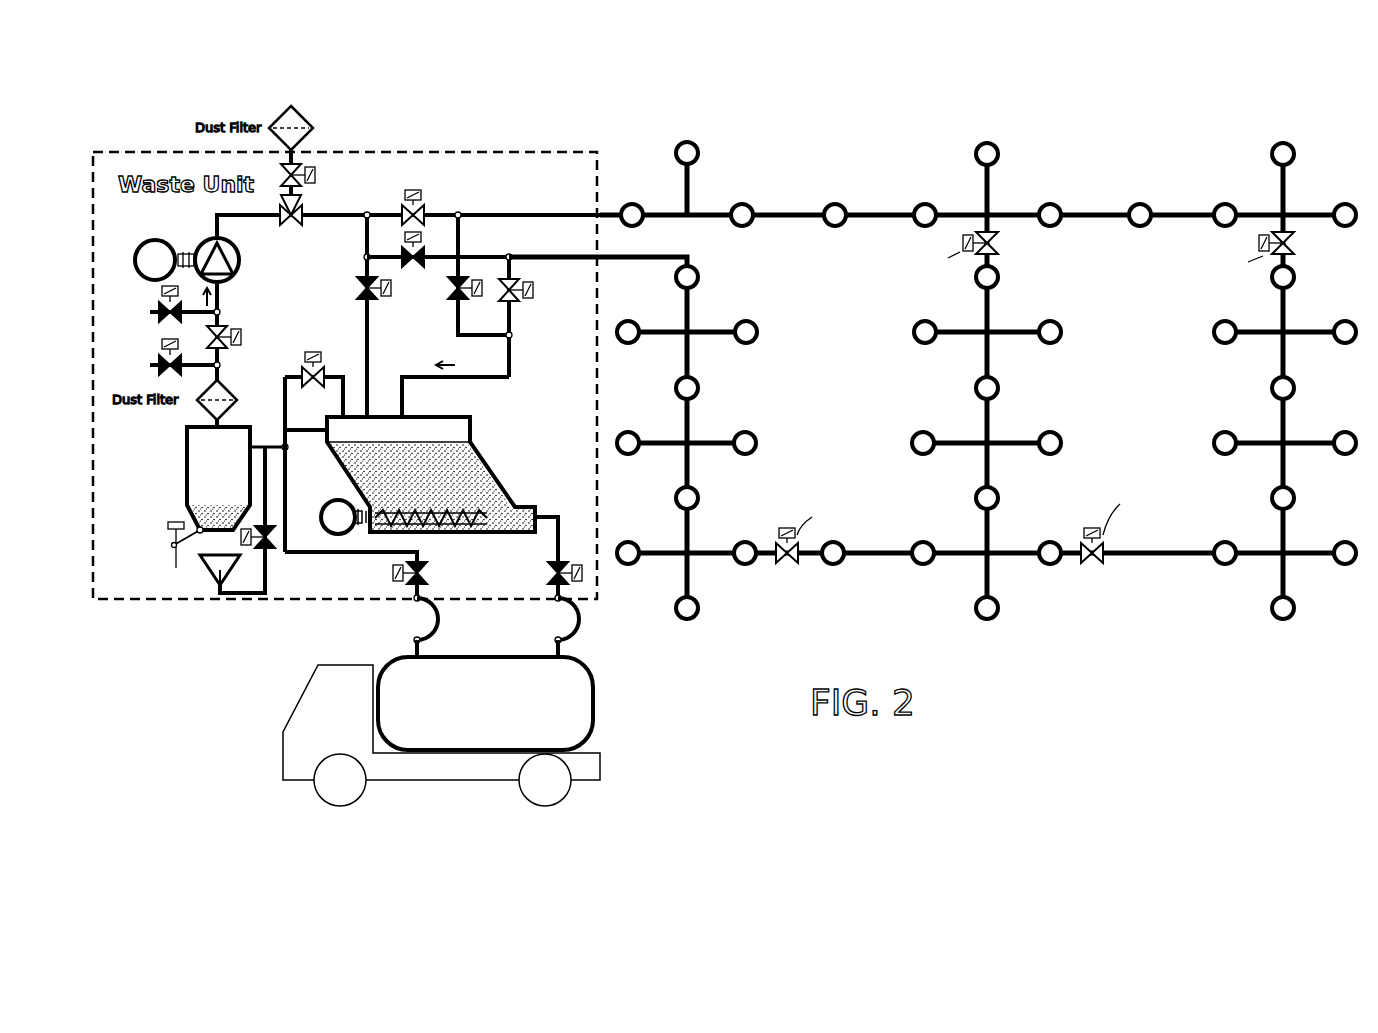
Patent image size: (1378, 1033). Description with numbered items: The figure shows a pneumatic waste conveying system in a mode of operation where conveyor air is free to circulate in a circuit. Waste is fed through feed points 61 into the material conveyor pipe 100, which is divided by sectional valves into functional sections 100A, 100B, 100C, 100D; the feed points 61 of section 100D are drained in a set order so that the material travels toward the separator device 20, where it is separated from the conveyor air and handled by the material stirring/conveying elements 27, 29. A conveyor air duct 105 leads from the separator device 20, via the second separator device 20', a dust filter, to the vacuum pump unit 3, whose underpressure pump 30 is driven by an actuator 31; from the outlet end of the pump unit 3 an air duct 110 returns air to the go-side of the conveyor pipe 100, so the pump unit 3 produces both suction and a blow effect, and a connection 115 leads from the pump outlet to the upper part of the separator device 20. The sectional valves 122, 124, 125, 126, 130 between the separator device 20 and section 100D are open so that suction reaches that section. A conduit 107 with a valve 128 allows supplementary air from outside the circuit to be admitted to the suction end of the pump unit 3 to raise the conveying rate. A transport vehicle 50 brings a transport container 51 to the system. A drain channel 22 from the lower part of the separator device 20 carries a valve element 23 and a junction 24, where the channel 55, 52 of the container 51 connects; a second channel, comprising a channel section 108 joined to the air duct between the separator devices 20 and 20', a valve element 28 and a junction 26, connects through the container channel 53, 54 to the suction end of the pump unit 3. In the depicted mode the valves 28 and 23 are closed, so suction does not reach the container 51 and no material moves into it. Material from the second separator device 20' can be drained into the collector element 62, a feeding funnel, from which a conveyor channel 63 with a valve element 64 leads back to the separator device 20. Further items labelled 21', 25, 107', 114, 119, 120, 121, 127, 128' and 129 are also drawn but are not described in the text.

The vacuum pump unit 3 is at (199, 227).
The separator device 20 is at (431, 474).
The second separator device 20' is at (194, 478).
The level sensor of dust cyclone 21' is at (168, 528).
The drain channel 22 is at (548, 516).
The valve element 23 is at (547, 577).
The junction 24 is at (554, 600).
The dust filter 25 is at (222, 392).
The junction 26 is at (414, 600).
The material stirring/conveying element 27 is at (450, 532).
The valve element 28 is at (430, 578).
The material stirring/conveying element 29 is at (335, 500).
The underpressure pump 30 is at (231, 274).
The actuator 31 is at (158, 240).
The transport vehicle 50 is at (295, 750).
The transport container 51 is at (580, 712).
The transport container channel 52 is at (568, 645).
The second channel of transport container 53 is at (413, 641).
The second channel of transport container 54 is at (433, 635).
The transport container channel 55 is at (579, 617).
The feed point 61 is at (991, 144).
The collector element 62 is at (216, 575).
The conveyor channel 63 is at (250, 598).
The valve element 64 is at (272, 545).
The material conveyor pipe 100 is at (603, 210).
The functional section of conveyor pipe 100A is at (886, 210).
The functional section of conveyor pipe 100B is at (1280, 366).
The functional section of conveyor pipe 100C is at (883, 548).
The functional section of conveyor pipe 100D is at (682, 408).
The conveyor air duct 105 is at (287, 390).
The conduit 107 is at (157, 372).
The air inlet 107' is at (157, 331).
The channel section 108 is at (344, 556).
The air duct 110 is at (270, 220).
The inlet pipe 114 is at (495, 346).
The connection 115 is at (370, 360).
The dust filter 119 is at (305, 122).
The three-way valve 120 is at (296, 226).
The valve 121 is at (302, 168).
The sectional valve 122 is at (417, 206).
The sectional valve 124 is at (423, 268).
The sectional valve 125 is at (447, 305).
The sectional valve 126 is at (518, 302).
The valve 127 is at (229, 332).
The valve 128 is at (153, 356).
The valve 128' is at (147, 302).
The valve 129 is at (318, 360).
The sectional valve 130 is at (357, 290).